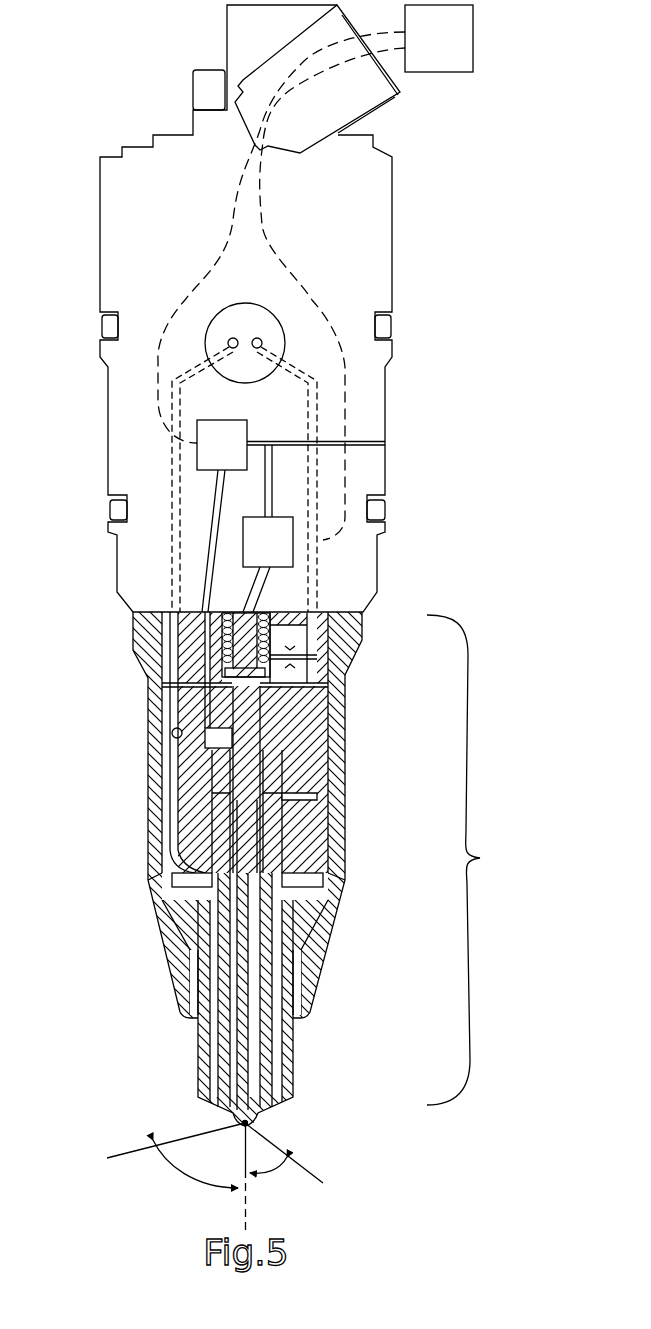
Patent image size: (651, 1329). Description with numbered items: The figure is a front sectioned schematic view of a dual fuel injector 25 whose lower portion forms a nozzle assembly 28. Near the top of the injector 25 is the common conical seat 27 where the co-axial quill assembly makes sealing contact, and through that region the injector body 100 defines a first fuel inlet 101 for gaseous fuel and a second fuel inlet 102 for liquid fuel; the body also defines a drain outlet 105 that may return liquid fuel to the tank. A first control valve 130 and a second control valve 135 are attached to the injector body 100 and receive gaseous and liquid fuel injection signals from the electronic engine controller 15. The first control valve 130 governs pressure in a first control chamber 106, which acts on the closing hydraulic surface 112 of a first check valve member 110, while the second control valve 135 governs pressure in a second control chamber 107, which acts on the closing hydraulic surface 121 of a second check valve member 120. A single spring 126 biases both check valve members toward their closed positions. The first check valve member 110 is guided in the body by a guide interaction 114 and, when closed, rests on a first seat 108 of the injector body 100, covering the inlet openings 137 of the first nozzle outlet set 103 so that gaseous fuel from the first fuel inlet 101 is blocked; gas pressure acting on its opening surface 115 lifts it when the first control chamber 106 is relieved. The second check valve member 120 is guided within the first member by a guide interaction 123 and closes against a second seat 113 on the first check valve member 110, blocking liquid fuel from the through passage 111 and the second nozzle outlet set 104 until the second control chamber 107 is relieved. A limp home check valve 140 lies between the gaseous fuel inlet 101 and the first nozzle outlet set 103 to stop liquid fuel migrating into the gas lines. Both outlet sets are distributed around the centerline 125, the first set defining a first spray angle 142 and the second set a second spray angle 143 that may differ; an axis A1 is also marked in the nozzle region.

The electronic engine controller 15 is at (439, 38).
The fuel injector 25 is at (393, 252).
The common conical seat 27 is at (227, 326).
The nozzle assembly 28 is at (463, 860).
The injector body 100 is at (345, 690).
The first fuel inlet 101 is at (229, 343).
The second fuel inlet 102 is at (261, 343).
The first nozzle outlet set 103 is at (277, 1105).
The second nozzle outlet set 104 is at (237, 1117).
The drain outlet 105 is at (385, 443).
The first control chamber 106 is at (178, 760).
The second control chamber 107 is at (272, 670).
The first seat 108 is at (293, 1077).
The first check valve member 110 is at (218, 832).
The through passage 111 is at (200, 1063).
The closing hydraulic surface 112 is at (265, 732).
The second seat 113 is at (290, 1063).
The guide interaction 114 is at (285, 820).
The opening surface 115 is at (222, 887).
The second check valve member 120 is at (247, 840).
The closing hydraulic surface 121 is at (233, 679).
The guide interaction 123 is at (218, 736).
The centerline 125 is at (246, 1212).
The spring 126 is at (275, 625).
The first control valve 130 is at (197, 444).
The second control valve 135 is at (293, 543).
The inlet opening 137 is at (200, 1093).
The limp home check valve 140 is at (172, 733).
The first spray angle 142 is at (187, 1175).
The second spray angle 143 is at (275, 1165).
The axis A1 is at (275, 863).